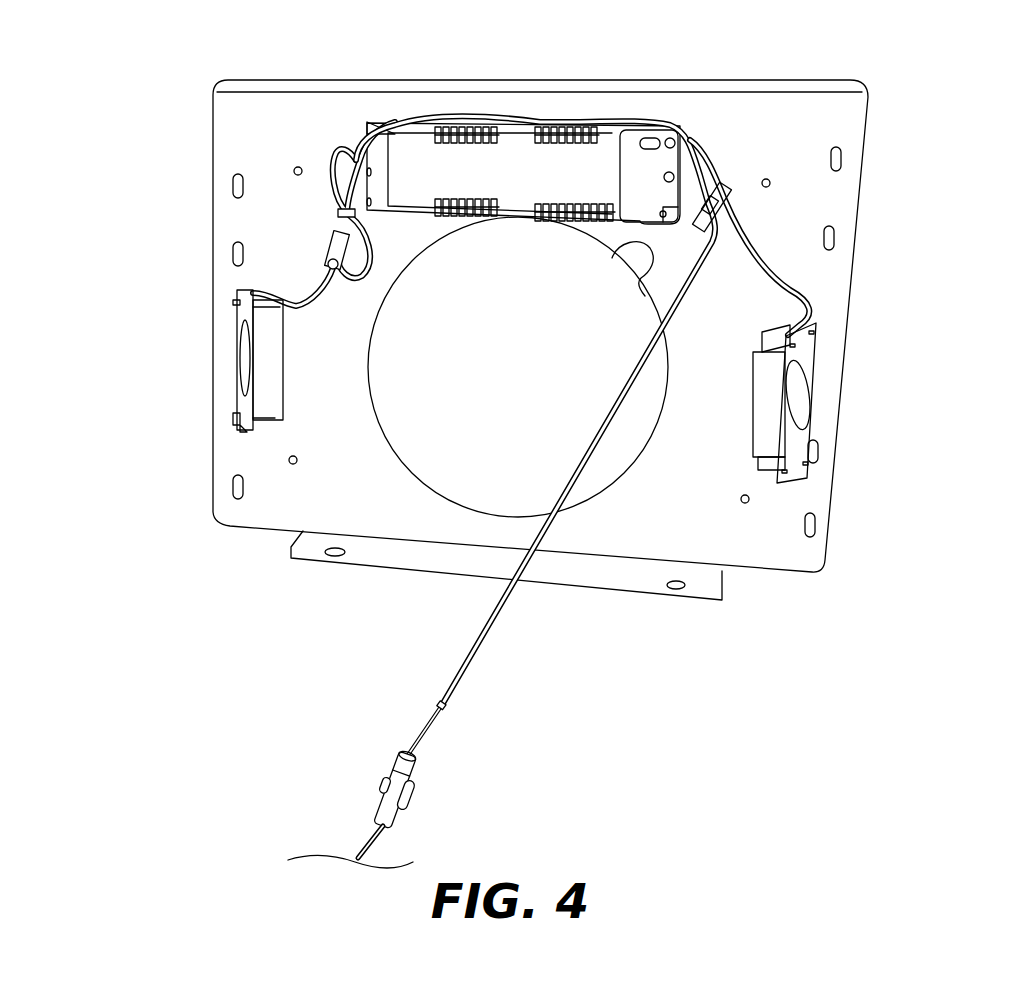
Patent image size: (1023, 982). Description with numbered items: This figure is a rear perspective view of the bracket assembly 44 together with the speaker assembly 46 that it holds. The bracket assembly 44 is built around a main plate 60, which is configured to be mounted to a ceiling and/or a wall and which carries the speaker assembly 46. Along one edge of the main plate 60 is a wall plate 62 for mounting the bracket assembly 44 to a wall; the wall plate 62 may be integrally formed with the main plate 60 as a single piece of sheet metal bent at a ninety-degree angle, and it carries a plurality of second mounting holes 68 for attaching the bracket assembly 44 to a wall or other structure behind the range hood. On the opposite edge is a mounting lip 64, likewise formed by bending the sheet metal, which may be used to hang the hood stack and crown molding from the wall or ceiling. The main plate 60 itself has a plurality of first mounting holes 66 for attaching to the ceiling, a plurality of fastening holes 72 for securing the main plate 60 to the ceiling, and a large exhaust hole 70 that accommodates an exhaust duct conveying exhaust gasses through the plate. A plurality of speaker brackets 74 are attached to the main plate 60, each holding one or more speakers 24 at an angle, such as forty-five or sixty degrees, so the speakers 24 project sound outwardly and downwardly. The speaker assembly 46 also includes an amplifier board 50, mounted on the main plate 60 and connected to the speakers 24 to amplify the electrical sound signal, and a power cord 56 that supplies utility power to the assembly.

The speakers 24 is at (267, 357).
The bracket assembly 44 is at (615, 287).
The speaker assembly 46 is at (358, 103).
The amplifier board 50 is at (620, 170).
The power cord 56 is at (497, 628).
The main plate 60 is at (530, 371).
The wall plate 62 is at (506, 617).
The mounting lip 64 is at (543, 83).
The first mounting holes 66 is at (541, 310).
The second mounting holes 68 is at (336, 557).
The exhaust hole 70 is at (377, 320).
The fastening holes 72 is at (232, 187).
The speaker brackets 74 is at (243, 405).